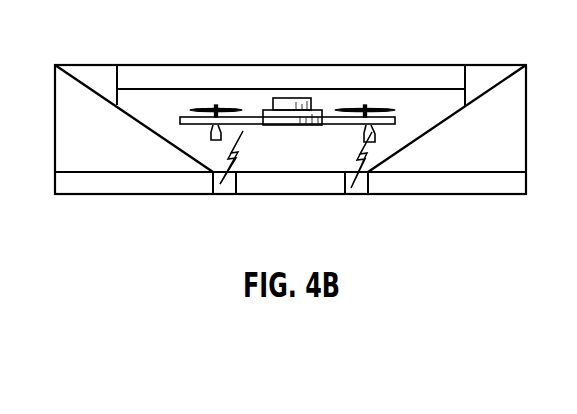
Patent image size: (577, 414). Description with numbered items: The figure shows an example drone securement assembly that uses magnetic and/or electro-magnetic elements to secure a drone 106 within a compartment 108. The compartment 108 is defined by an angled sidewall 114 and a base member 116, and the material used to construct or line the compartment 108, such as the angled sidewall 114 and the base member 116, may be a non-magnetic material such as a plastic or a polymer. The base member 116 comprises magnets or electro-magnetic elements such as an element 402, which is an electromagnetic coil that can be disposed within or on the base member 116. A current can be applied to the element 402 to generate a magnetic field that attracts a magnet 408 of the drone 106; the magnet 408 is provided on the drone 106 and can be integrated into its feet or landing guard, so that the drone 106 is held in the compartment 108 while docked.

The drone 106 is at (334, 97).
The compartment 108 is at (425, 100).
The angled sidewall 114 is at (145, 125).
The base member 116 is at (418, 182).
The element 402 is at (353, 188).
The magnet 408 is at (180, 120).